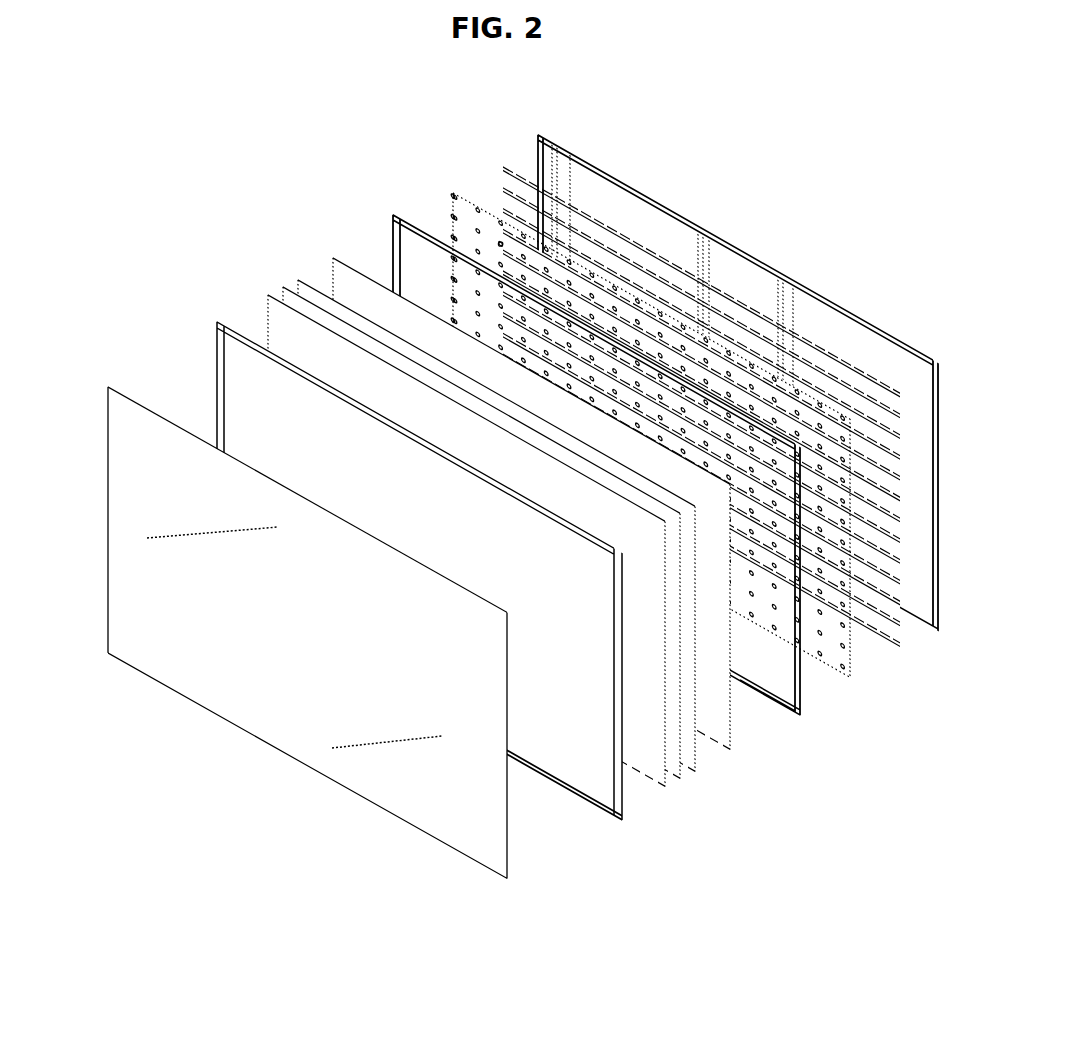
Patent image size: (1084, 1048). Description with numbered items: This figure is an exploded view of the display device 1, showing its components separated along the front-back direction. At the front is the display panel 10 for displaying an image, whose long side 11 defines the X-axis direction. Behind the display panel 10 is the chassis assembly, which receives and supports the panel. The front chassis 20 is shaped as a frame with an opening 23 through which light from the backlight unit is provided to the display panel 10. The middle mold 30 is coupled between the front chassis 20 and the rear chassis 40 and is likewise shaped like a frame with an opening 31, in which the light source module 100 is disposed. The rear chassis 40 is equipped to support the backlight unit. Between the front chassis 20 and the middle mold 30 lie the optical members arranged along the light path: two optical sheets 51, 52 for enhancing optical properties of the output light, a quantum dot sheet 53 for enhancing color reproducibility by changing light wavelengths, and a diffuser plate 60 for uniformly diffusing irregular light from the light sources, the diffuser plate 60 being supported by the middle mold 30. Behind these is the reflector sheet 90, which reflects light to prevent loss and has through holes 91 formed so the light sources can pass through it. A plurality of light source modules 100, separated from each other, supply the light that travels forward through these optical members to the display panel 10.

The display device 1 is at (345, 104).
The display panel 10 is at (281, 621).
The long side 11 is at (307, 499).
The front chassis 20 is at (400, 571).
The opening 23 is at (419, 702).
The middle mold 30 is at (393, 215).
The opening 31 is at (776, 697).
The rear chassis 40 is at (553, 142).
The optical sheet 51 is at (268, 295).
The optical sheet 52 is at (283, 287).
The quantum dot sheet 53 is at (298, 280).
The diffuser plate 60 is at (333, 258).
The reflector sheet 90 is at (453, 193).
The through hole 91 is at (500, 242).
The light source module 100 is at (505, 165).